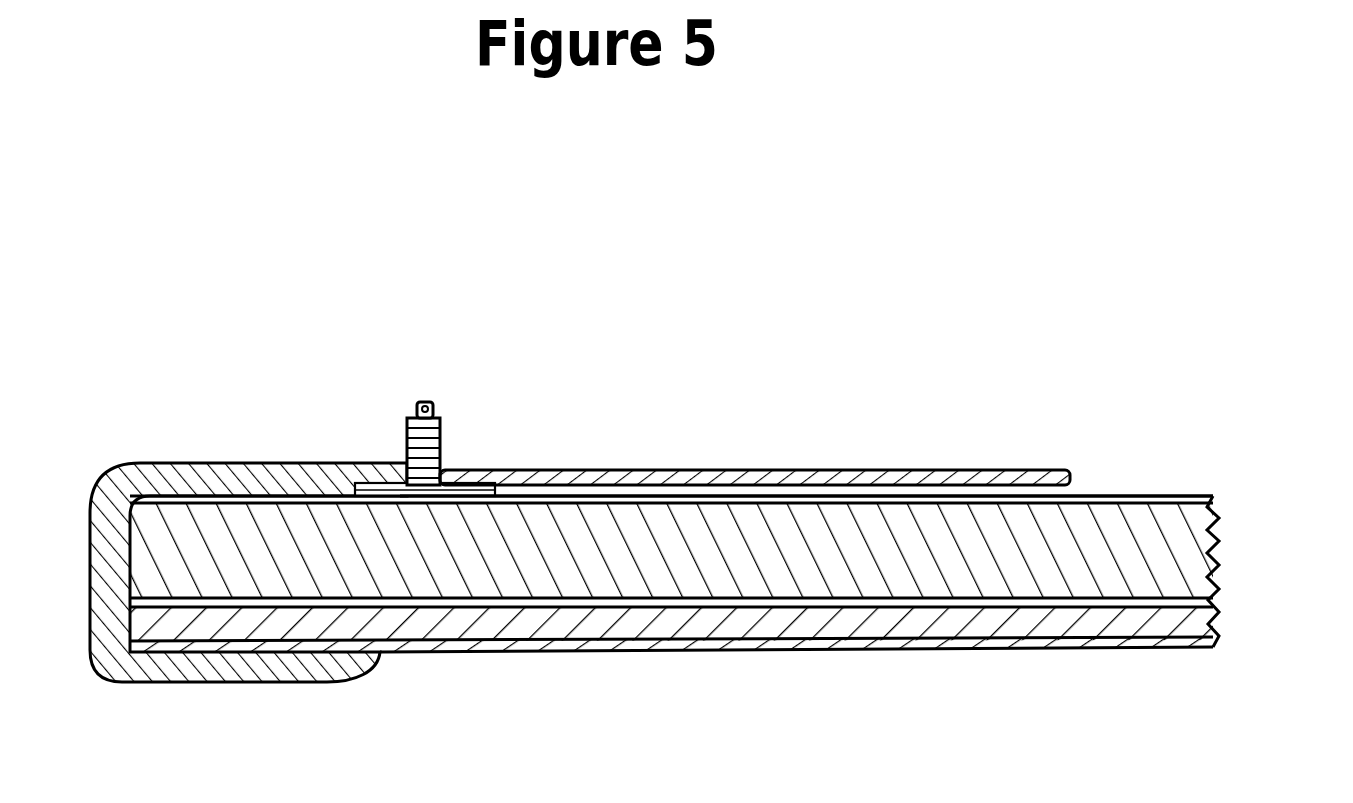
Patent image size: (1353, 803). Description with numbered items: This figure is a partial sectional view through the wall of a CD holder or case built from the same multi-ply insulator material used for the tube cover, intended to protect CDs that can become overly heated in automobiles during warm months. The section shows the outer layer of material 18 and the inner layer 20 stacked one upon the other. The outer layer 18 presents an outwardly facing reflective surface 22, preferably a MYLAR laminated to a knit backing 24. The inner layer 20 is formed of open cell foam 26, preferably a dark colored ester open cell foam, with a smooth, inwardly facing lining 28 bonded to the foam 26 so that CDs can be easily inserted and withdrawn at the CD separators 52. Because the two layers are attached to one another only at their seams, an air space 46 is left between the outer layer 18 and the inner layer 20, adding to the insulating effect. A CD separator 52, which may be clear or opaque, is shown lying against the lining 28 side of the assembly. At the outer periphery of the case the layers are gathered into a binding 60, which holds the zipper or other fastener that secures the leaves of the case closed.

The outer layer of material 18 is at (598, 652).
The inner layer 20 is at (1145, 495).
The reflective surface 22 is at (1155, 648).
The knit backing 24 is at (1217, 645).
The open cell foam 26 is at (1157, 570).
The lining 28 is at (1213, 498).
The air space 46 is at (913, 600).
The CD separators 52 is at (805, 470).
The binding 60 is at (138, 467).